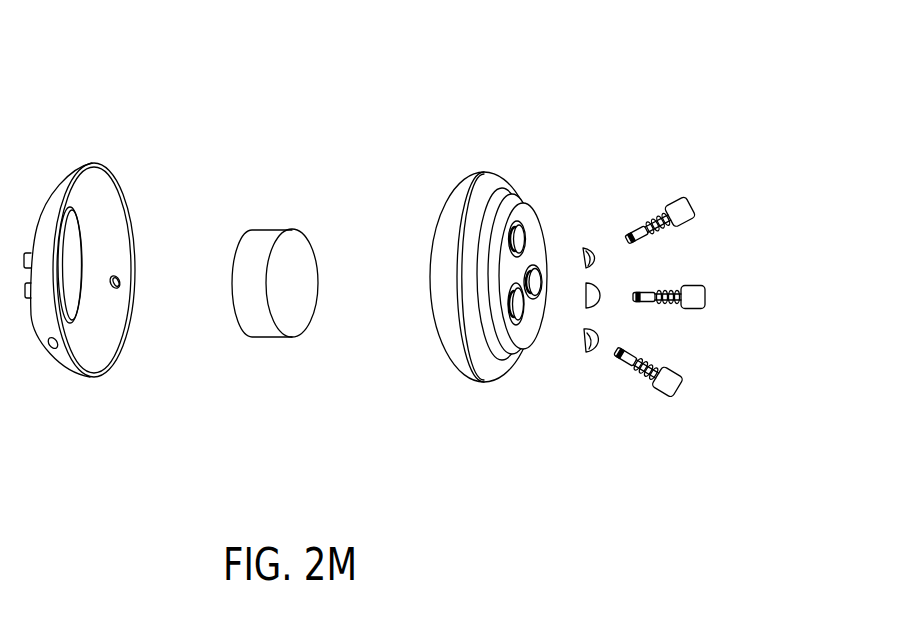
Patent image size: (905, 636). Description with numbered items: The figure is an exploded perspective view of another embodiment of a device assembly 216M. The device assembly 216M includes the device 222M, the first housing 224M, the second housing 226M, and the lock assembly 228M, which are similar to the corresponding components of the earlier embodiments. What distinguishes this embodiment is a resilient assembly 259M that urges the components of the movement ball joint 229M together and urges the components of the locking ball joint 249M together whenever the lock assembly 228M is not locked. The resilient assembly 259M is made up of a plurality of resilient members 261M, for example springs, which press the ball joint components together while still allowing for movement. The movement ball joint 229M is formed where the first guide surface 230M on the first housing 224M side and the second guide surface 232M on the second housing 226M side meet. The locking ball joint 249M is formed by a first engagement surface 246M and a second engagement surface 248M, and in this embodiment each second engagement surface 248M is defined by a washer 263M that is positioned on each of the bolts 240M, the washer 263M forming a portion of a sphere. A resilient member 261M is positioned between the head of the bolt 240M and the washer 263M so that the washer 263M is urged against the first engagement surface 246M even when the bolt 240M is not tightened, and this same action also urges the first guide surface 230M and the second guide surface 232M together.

The device assembly 216M is at (498, 201).
The device 222M is at (262, 235).
The first housing 224M is at (566, 228).
The second housing 226M is at (54, 190).
The lock assembly 228M is at (708, 198).
The movement ball joint 229M is at (408, 103).
The first guide surface 230M is at (455, 212).
The second guide surface 232M is at (107, 203).
The bolt 240M is at (696, 297).
The first engagement surface 246M is at (532, 264).
The second engagement surface 248M is at (587, 245).
The locking ball joint 249M is at (787, 92).
The resilient assembly 259M is at (677, 363).
The resilient member 261M is at (650, 367).
The washer 263M is at (584, 331).